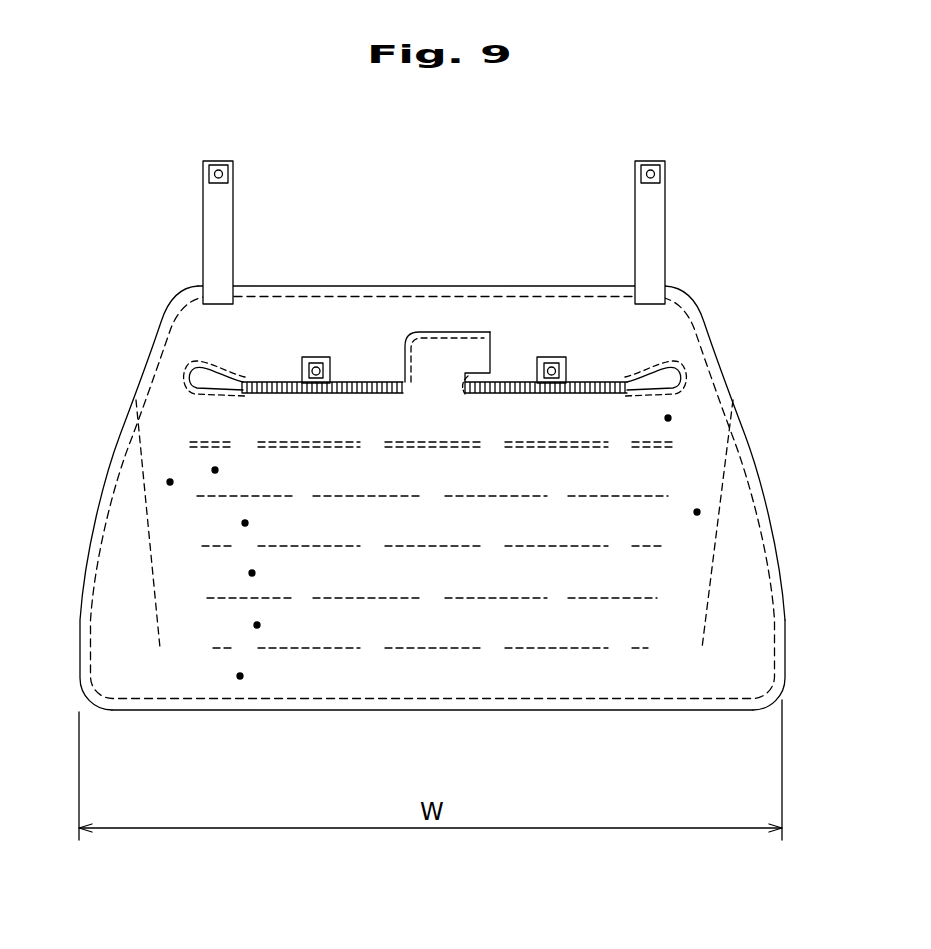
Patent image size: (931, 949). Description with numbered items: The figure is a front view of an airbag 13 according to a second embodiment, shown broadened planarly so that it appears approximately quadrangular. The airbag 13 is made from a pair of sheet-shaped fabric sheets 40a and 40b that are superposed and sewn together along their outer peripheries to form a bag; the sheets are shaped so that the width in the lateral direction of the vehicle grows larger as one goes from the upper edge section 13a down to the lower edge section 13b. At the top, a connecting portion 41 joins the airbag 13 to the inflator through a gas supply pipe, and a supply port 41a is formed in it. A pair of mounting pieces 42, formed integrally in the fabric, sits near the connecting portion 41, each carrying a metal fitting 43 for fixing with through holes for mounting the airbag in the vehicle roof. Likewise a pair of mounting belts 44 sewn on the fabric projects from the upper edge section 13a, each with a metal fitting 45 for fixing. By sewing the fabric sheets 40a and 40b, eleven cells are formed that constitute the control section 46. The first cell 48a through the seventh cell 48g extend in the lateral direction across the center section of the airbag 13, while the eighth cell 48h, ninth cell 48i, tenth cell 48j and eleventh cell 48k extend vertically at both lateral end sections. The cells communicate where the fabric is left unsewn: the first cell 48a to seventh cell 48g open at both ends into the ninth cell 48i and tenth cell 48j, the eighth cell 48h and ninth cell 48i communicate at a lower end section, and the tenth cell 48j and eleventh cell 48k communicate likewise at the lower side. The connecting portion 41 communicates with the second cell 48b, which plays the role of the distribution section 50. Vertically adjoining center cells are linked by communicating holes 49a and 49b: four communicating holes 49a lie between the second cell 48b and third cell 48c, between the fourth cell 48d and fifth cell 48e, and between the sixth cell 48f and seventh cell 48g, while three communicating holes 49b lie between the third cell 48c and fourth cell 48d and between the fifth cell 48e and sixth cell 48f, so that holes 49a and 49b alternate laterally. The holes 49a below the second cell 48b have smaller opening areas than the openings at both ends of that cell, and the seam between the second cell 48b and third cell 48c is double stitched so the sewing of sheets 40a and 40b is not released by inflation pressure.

The airbag 13 is at (787, 243).
The upper edge section 13a is at (306, 286).
The lower edge section 13b is at (598, 712).
The fabric sheet 40a is at (712, 343).
The fabric sheet 40b is at (822, 390).
The connecting portion 41 is at (418, 332).
The supply port 41a is at (490, 340).
The mounting piece 42 is at (315, 357).
The metal fitting 43 is at (330, 371).
The mounting belt 44 is at (203, 225).
The metal fitting 45 is at (228, 174).
The control section 46 is at (800, 580).
The first cell 48a is at (258, 350).
The second cell 48b is at (668, 418).
The third cell 48c is at (215, 470).
The fourth cell 48d is at (245, 523).
The fifth cell 48e is at (252, 573).
The sixth cell 48f is at (257, 625).
The seventh cell 48g is at (240, 676).
The eighth cell 48h is at (147, 648).
The ninth cell 48i is at (170, 482).
The tenth cell 48j is at (697, 512).
The eleventh cell 48k is at (760, 651).
The communicating hole 49a is at (372, 441).
The communicating hole 49b is at (433, 489).
The distribution section 50 is at (138, 302).